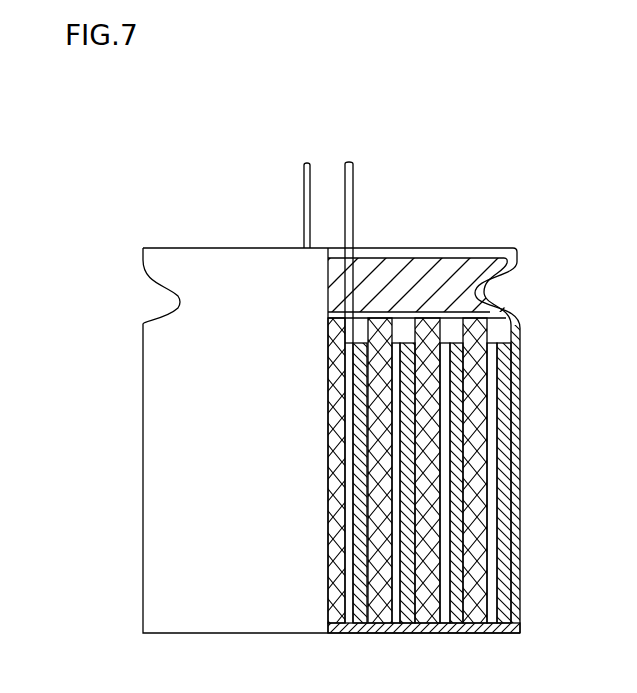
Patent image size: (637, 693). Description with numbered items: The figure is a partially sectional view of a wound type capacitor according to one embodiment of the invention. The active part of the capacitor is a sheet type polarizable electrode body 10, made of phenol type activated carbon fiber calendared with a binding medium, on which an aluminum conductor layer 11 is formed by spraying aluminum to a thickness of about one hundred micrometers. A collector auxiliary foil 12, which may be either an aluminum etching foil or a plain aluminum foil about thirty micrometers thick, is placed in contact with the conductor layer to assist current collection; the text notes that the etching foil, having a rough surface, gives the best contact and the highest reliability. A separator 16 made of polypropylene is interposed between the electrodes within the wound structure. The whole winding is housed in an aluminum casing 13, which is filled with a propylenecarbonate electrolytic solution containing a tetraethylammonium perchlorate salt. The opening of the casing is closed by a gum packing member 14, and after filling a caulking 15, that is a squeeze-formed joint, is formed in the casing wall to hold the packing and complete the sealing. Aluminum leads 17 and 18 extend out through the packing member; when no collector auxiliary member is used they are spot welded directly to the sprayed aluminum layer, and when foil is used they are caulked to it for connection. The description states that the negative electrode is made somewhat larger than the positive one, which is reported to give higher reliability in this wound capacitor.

The sheet type polarizable electrode body 10 is at (502, 363).
The aluminum conductor layer 11 is at (497, 522).
The collector auxiliary foil 12 is at (477, 625).
The aluminum casing 13 is at (243, 622).
The gum packing member 14 is at (438, 268).
The caulking 15 is at (175, 302).
The separator 16 is at (482, 332).
The aluminum lead 17 is at (355, 188).
The aluminum lead 18 is at (311, 178).